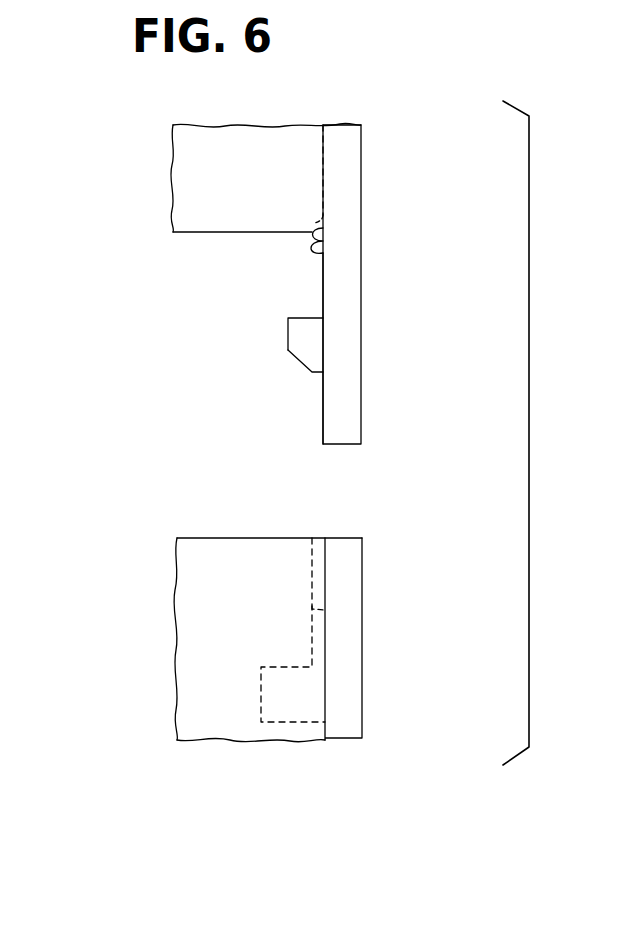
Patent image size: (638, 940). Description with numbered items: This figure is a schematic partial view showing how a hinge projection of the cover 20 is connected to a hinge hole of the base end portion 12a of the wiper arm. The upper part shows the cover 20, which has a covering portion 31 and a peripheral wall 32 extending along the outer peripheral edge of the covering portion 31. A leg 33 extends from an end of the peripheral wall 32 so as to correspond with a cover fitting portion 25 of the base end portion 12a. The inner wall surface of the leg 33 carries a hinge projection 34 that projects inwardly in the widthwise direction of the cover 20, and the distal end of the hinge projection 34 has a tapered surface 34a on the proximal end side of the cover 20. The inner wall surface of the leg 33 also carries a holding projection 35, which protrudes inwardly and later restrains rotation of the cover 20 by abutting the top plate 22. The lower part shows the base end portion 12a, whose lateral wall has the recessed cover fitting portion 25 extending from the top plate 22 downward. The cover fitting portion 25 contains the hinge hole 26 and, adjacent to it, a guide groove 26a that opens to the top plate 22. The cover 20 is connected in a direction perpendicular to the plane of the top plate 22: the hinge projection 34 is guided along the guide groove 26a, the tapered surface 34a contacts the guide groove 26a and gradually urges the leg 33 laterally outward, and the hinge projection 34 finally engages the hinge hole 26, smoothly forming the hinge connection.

The cover 20 is at (142, 233).
The covering portion 31 is at (203, 232).
The peripheral wall 32 is at (361, 163).
The leg 33 is at (355, 323).
The hinge projection 34 is at (305, 318).
The tapered surface 34a is at (295, 362).
The holding projection 35 is at (315, 253).
The base end portion 12a is at (152, 543).
The top plate 22 is at (252, 535).
The cover fitting portion 25 is at (325, 572).
The hinge hole 26 is at (298, 712).
The guide groove 26a is at (325, 612).